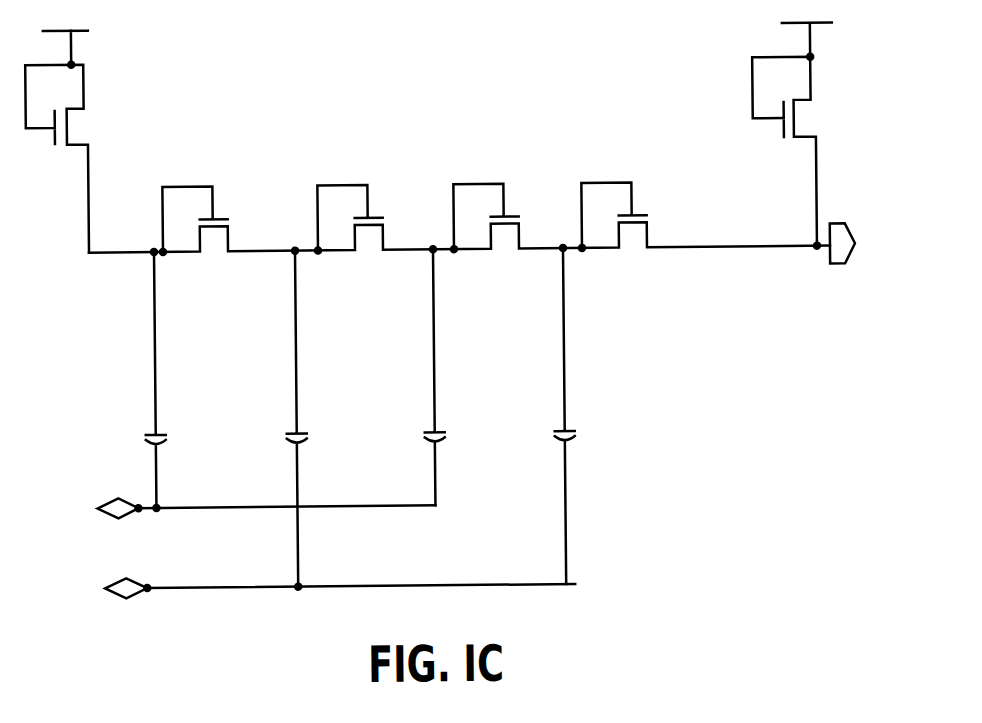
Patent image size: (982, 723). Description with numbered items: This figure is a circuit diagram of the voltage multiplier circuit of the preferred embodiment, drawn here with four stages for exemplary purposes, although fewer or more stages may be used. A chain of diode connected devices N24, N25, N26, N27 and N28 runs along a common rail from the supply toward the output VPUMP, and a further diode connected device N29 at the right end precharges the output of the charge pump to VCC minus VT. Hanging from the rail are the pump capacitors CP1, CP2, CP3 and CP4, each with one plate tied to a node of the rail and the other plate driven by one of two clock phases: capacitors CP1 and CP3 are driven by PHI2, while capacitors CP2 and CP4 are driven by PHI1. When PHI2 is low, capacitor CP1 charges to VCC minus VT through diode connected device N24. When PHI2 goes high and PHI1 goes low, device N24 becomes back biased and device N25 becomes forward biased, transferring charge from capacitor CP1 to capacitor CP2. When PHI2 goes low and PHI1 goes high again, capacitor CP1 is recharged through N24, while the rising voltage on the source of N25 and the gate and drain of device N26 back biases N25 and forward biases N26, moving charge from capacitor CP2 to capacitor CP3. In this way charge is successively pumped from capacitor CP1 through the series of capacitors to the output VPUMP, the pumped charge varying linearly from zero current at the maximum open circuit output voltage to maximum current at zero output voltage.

The diode connected device N24 is at (62, 142).
The diode connected device N25 is at (193, 221).
The device N26 is at (348, 219).
The diode connected device N27 is at (484, 218).
The diode connected device N28 is at (612, 216).
The diode connected device N29 is at (795, 132).
The capacitor CP1 is at (154, 380).
The capacitor CP2 is at (298, 418).
The capacitor CP3 is at (436, 376).
The capacitor CP4 is at (564, 415).
The clock phase PHI1 is at (340, 578).
The clock phase PHI2 is at (241, 501).
The output VPUMP is at (867, 243).